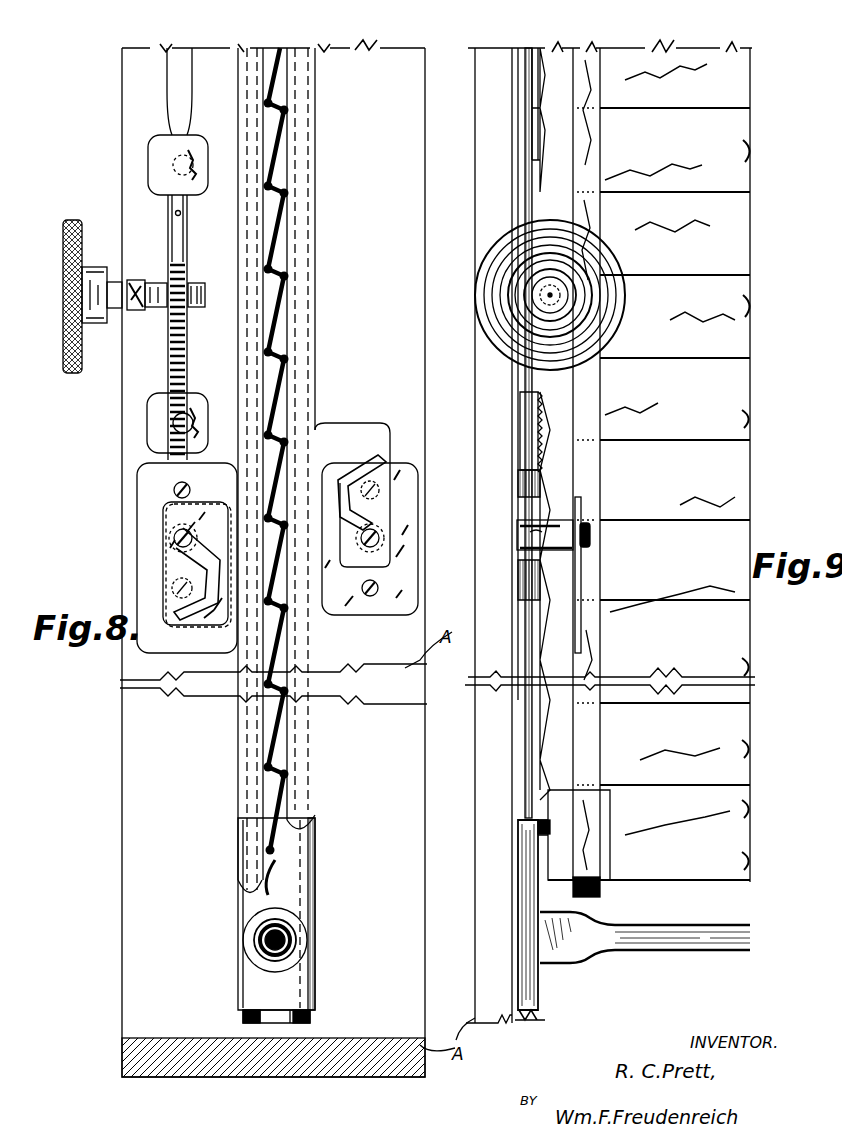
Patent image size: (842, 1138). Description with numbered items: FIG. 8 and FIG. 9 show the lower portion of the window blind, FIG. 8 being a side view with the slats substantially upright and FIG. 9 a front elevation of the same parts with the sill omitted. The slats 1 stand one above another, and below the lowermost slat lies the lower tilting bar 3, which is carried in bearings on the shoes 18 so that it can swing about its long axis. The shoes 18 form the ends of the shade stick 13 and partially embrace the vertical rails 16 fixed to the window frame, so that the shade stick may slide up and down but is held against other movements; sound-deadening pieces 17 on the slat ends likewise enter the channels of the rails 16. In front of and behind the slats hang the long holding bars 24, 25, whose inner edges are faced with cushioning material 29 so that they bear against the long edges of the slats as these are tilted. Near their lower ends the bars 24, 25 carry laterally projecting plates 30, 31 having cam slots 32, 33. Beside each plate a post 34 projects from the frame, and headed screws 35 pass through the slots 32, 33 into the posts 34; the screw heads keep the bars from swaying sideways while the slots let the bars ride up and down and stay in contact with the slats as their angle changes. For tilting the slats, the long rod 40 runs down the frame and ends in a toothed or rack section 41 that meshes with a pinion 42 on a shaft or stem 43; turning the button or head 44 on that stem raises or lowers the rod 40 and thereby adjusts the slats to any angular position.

In FIG. 8, the slats 1 is at (278, 148).
In FIG. 9, the slats 1 is at (722, 265).
In FIG. 8, the lower tilting bar 3 is at (312, 848).
In FIG. 9, the lower tilting bar 3 is at (705, 870).
In FIG. 8, the shade stick 13 is at (296, 938).
In FIG. 9, the shade stick 13 is at (688, 938).
In FIG. 8, the vertical rails 16 is at (308, 1012).
In FIG. 9, the vertical rails 16 is at (515, 118).
In FIG. 9, the sound-deadening pieces 17 is at (530, 728).
In FIG. 8, the shoes 18 is at (278, 893).
In FIG. 9, the shoes 18 is at (522, 845).
In FIG. 8, the front holding bars 24 is at (262, 244).
In FIG. 9, the front holding bars 24 is at (592, 730).
In FIG. 8, the rear holding bars 25 is at (300, 233).
In FIG. 8, the cushioning material 29 is at (290, 310).
In FIG. 8, the laterally projecting plate 30 is at (170, 572).
In FIG. 9, the laterally projecting plate 30 is at (582, 568).
In FIG. 8, the laterally projecting plate 31 is at (335, 448).
In FIG. 8, the cam slot 32 is at (162, 625).
In FIG. 8, the cam slot 33 is at (385, 455).
In FIG. 9, the post 34 is at (545, 535).
In FIG. 8, the headed screws 35 is at (178, 530).
In FIG. 9, the headed screws 35 is at (593, 540).
In FIG. 8, the rod 40 is at (178, 88).
In FIG. 9, the rod 40 is at (522, 60).
In FIG. 8, the toothed or rack section 41 is at (178, 360).
In FIG. 9, the toothed or rack section 41 is at (525, 430).
In FIG. 8, the pinion 42 is at (188, 274).
In FIG. 8, the shaft or stem 43 is at (136, 284).
In FIG. 8, the button or head 44 is at (78, 218).
In FIG. 9, the button or head 44 is at (624, 290).